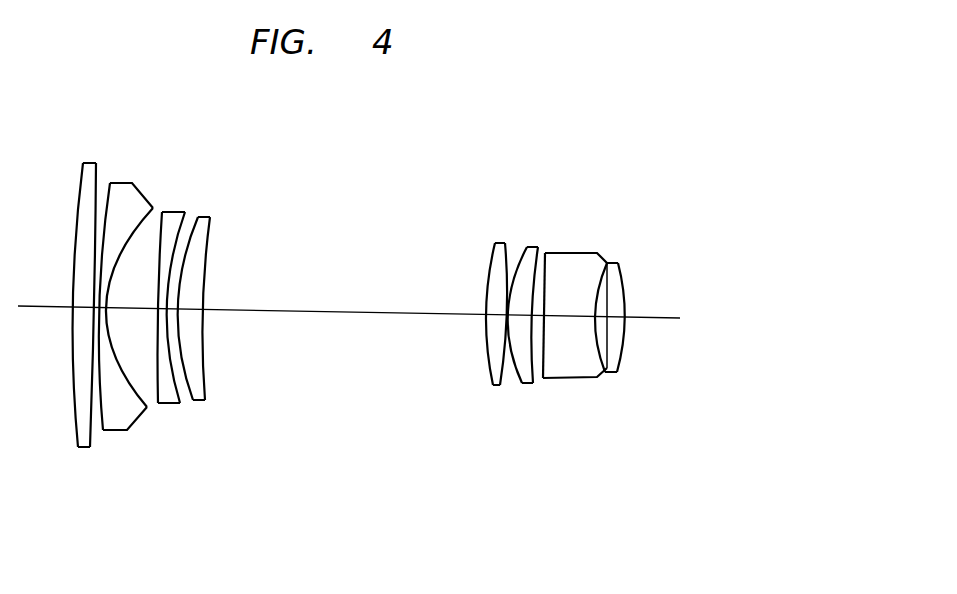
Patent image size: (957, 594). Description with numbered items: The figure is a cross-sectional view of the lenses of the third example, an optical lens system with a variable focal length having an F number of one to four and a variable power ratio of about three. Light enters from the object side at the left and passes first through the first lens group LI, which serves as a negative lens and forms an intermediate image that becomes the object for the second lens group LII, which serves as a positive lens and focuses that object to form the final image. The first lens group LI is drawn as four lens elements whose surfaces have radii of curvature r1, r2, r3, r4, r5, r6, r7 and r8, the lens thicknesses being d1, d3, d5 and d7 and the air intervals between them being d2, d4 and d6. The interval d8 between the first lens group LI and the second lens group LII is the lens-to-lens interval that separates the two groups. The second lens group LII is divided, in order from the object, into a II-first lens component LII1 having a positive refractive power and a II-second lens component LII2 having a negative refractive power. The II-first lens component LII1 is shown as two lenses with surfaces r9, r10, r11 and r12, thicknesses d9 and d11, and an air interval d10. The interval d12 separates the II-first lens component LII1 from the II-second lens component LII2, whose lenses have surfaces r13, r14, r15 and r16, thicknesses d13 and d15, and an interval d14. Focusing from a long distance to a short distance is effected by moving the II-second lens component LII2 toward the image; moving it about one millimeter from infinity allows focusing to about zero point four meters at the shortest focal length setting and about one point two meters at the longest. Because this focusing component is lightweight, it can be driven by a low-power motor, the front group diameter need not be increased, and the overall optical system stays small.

The radius of curvature of first lens surface r1 is at (82, 182).
The radius of curvature of second lens surface r2 is at (97, 178).
The radius of curvature of third lens surface r3 is at (106, 186).
The radius of curvature of fourth lens surface r4 is at (152, 208).
The radius of curvature of fifth lens surface r5 is at (161, 212).
The radius of curvature of sixth lens surface r6 is at (186, 215).
The radius of curvature of seventh lens surface r7 is at (199, 222).
The radius of curvature of eighth lens surface r8 is at (211, 224).
The radius of curvature of ninth lens surface r9 is at (494, 246).
The radius of curvature of tenth lens surface r10 is at (506, 246).
The radius of curvature of eleventh lens surface r11 is at (526, 248).
The radius of curvature of twelfth lens surface r12 is at (540, 250).
The radius of curvature of thirteenth lens surface r13 is at (546, 262).
The radius of curvature of fourteenth lens surface r14 is at (600, 262).
The radius of curvature of fifteenth lens surface r15 is at (609, 262).
The radius of curvature of sixteenth lens surface r16 is at (619, 272).
The lens thickness d1 is at (85, 310).
The lens-to-lens interval d2 is at (104, 310).
The lens thickness d3 is at (132, 310).
The lens-to-lens interval d4 is at (152, 312).
The lens thickness d5 is at (165, 312).
The lens-to-lens interval d6 is at (182, 312).
The lens thickness d7 is at (192, 312).
The lens-to-lens interval d8 is at (362, 318).
The lens thickness d9 is at (498, 325).
The lens-to-lens interval d10 is at (508, 325).
The lens thickness d11 is at (527, 325).
The lens-to-lens interval d12 is at (540, 325).
The lens thickness d13 is at (580, 325).
The lens-to-lens interval d14 is at (602, 325).
The lens thickness d15 is at (612, 330).
The first lens group LI is at (213, 102).
The second lens group LII is at (622, 110).
The II-first lens component LII1 is at (533, 517).
The II-second lens component LII2 is at (613, 517).